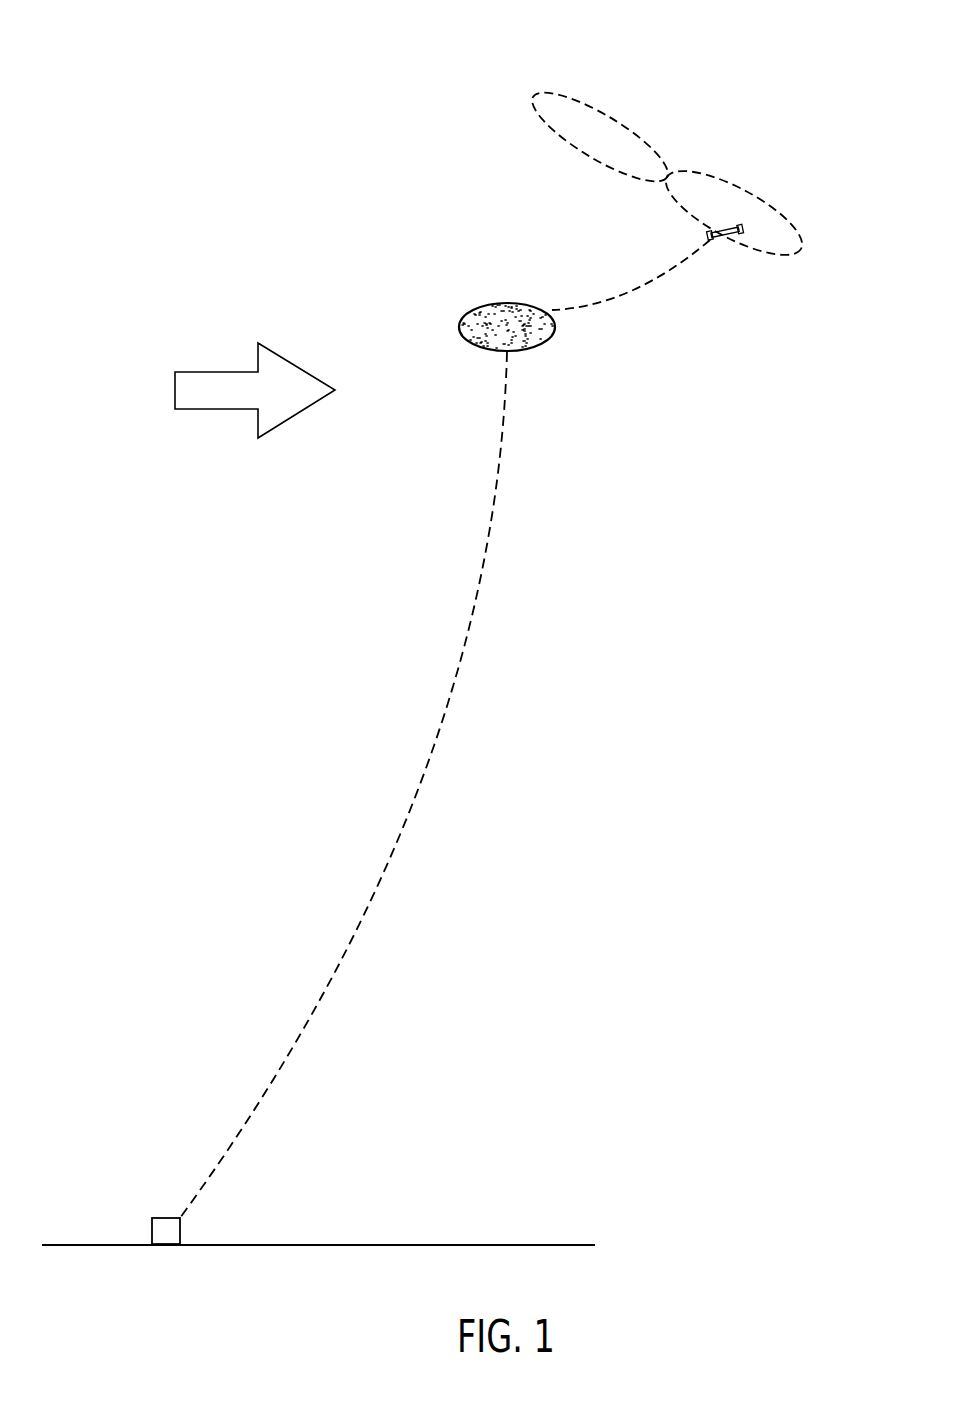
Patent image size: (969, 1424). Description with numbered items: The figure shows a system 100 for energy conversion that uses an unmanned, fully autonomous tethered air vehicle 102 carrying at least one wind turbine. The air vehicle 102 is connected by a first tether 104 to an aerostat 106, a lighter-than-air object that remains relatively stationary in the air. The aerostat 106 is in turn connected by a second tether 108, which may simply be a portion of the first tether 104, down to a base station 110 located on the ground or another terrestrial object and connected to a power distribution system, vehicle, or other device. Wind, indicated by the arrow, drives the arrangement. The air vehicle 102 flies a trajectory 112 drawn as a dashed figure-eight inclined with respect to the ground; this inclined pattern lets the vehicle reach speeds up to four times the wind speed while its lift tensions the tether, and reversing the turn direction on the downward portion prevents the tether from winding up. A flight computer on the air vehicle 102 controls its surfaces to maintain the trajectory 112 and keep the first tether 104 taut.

The system for energy conversion 100 is at (466, 75).
The tethered air vehicle 102 is at (729, 241).
The first tether 104 is at (630, 292).
The aerostat 106 is at (555, 327).
The second tether 108 is at (431, 766).
The base station 110 is at (152, 1232).
The trajectory 112 is at (570, 142).